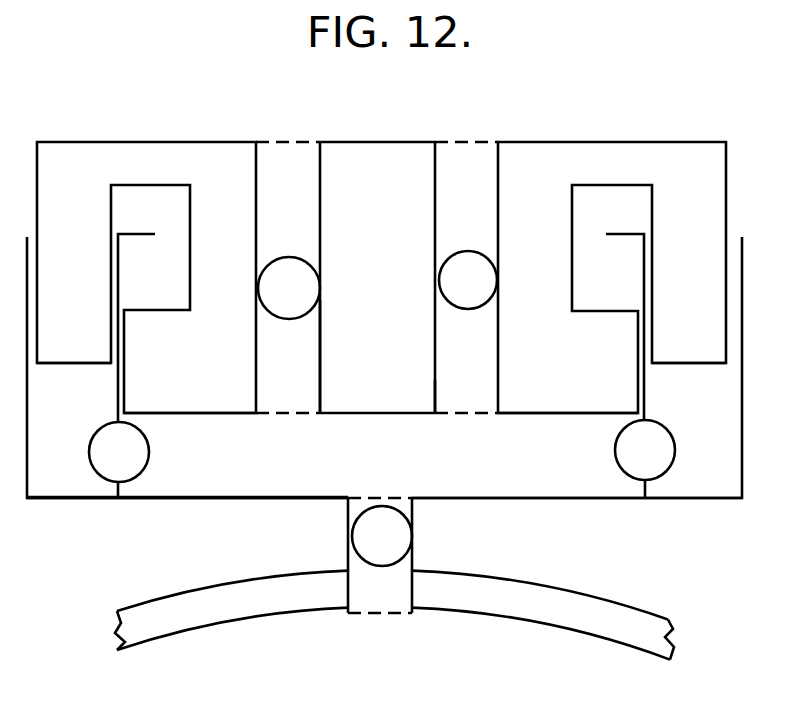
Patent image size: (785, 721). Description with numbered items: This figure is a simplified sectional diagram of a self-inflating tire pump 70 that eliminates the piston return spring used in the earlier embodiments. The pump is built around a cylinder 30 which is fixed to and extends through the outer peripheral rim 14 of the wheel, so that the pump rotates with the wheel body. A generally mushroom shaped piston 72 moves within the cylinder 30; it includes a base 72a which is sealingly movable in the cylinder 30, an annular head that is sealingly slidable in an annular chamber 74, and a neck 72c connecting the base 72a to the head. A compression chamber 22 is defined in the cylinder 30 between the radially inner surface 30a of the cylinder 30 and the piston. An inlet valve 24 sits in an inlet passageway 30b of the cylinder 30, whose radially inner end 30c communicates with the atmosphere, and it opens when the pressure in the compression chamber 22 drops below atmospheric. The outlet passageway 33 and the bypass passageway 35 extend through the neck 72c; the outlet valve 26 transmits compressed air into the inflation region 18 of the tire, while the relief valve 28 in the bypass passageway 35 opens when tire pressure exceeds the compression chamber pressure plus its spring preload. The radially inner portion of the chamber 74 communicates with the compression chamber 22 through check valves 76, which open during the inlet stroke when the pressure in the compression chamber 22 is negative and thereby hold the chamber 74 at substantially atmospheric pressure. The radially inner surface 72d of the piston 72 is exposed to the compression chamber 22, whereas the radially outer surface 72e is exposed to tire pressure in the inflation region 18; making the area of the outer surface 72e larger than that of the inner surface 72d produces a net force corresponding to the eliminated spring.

The outer peripheral rim 14 is at (638, 622).
The annular inflation region 18 is at (367, 114).
The compression chamber 22 is at (320, 466).
The inlet valve 24 is at (411, 530).
The outlet valve 26 is at (440, 283).
The relief valve 28 is at (317, 277).
The cylinder 30 is at (647, 407).
The radially inner surface of the cylinder 30a is at (273, 498).
The inlet passageway 30b is at (412, 587).
The radially inner end of the inlet passageway 30c is at (353, 622).
The outlet passageway 33 is at (450, 390).
The bypass passageway 35 is at (320, 373).
The self-inflating tire pump 70 is at (278, 118).
The mushroom shaped piston 72 is at (155, 118).
The base 72a is at (582, 400).
The neck 72c is at (472, 150).
The radially inner surface of the piston 72d is at (220, 413).
The radially outer surface of the piston 72e is at (562, 142).
The annular chamber 74 is at (81, 399).
The check valves 76 is at (90, 454).